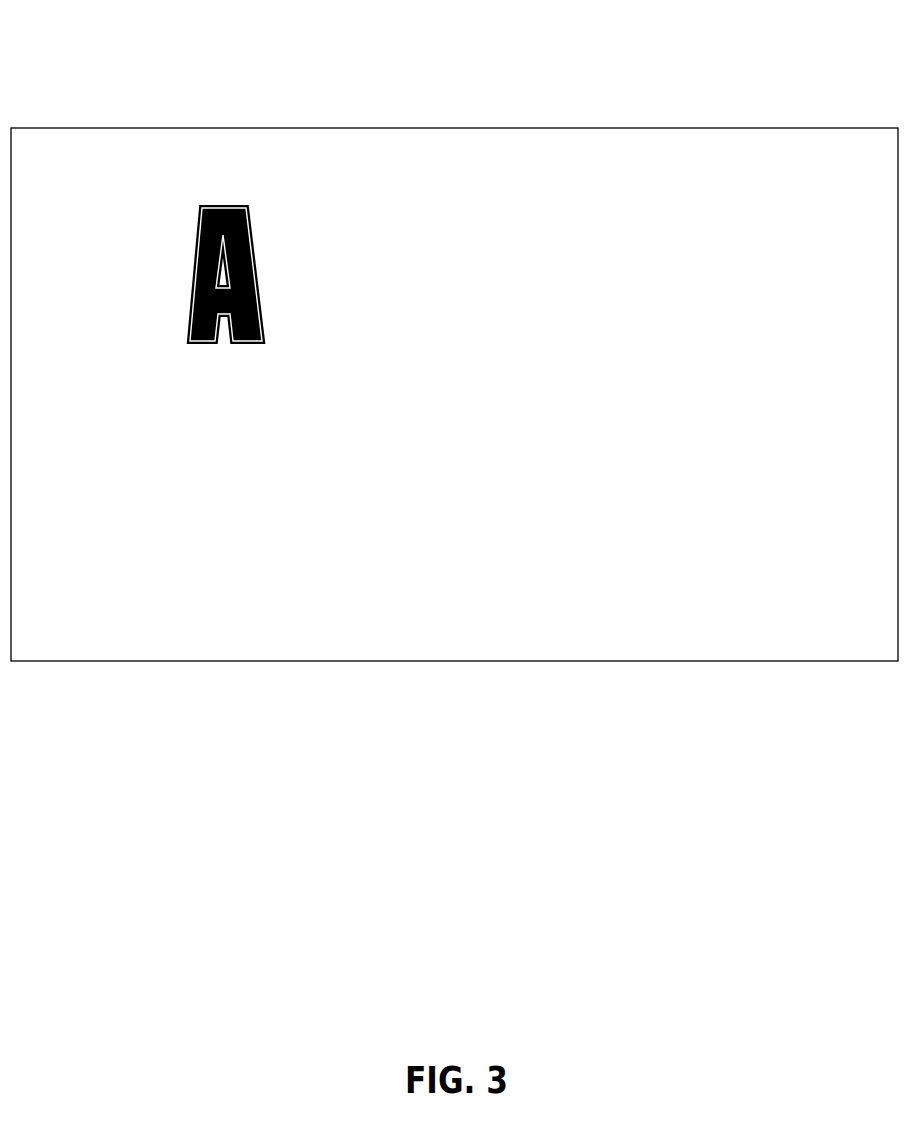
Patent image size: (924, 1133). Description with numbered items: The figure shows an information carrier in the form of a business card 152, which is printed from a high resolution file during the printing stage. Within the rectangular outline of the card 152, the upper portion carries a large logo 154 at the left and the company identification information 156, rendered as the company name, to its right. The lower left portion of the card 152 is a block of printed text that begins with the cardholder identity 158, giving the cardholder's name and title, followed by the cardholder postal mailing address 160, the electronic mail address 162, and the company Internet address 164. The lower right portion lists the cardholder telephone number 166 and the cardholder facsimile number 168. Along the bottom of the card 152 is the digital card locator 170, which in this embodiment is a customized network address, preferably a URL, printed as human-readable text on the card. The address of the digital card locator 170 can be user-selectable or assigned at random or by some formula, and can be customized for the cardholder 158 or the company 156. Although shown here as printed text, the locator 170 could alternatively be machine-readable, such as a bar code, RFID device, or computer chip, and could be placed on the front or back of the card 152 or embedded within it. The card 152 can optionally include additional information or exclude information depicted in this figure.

The card 152 is at (641, 125).
The logo 154 is at (186, 205).
The company identification information 156 is at (435, 243).
The cardholder identity 158 is at (52, 432).
The cardholder postal mailing address 160 is at (305, 533).
The electronic mail address 162 is at (285, 570).
The company Internet address 164 is at (148, 627).
The cardholder telephone number 166 is at (688, 472).
The cardholder facsimile number 168 is at (705, 523).
The digital card locator 170 is at (648, 627).